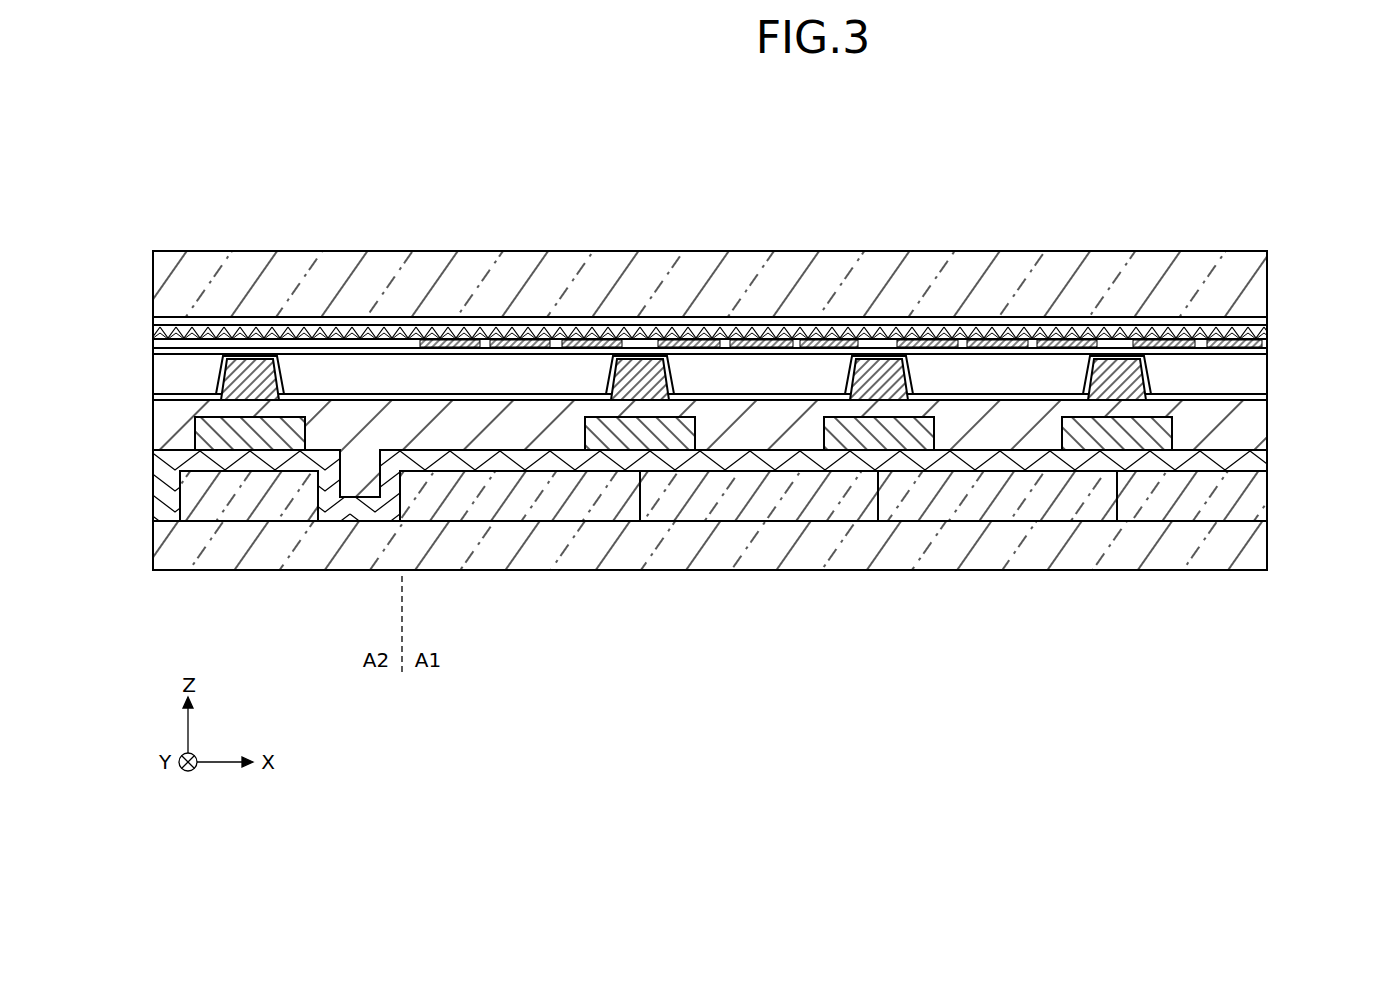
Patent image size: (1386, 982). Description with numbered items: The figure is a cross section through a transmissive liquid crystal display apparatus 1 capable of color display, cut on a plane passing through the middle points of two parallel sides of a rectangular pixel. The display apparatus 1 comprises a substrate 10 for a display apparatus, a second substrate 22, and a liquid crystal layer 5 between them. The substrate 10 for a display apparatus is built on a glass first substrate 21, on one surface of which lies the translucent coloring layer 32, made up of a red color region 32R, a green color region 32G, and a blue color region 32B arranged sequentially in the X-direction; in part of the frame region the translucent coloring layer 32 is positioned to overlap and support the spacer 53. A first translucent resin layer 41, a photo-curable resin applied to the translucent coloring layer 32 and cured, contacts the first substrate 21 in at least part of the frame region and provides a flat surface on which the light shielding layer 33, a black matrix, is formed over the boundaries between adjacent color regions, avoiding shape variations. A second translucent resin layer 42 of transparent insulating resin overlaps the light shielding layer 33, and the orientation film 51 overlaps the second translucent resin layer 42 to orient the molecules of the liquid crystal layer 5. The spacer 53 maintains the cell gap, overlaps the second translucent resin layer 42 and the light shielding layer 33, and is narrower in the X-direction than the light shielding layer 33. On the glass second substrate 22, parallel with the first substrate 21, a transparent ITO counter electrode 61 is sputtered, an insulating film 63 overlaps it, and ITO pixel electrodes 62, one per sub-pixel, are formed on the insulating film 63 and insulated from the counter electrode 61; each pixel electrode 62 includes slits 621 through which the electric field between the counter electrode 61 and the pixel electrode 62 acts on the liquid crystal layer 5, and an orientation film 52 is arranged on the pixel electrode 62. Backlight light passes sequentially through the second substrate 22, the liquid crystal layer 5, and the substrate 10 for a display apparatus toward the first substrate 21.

The display apparatus 1 is at (1208, 171).
The substrate for a display apparatus 10 is at (766, 400).
The first substrate 21 is at (1250, 545).
The second substrate 22 is at (1250, 263).
The translucent coloring layer 32 is at (752, 545).
The color region 32R is at (247, 500).
The color region 32G is at (770, 500).
The color region 32B is at (1000, 500).
The light shielding layer 33 is at (209, 428).
The first translucent resin layer 41 is at (1250, 462).
The second translucent resin layer 42 is at (1250, 425).
The liquid crystal layer 5 is at (1250, 380).
The orientation film 51 is at (1250, 397).
The orientation film 52 is at (1250, 352).
The spacer 53 is at (247, 375).
The counter electrode 61 is at (1252, 318).
The pixel electrode 62 is at (452, 342).
The slit 621 is at (486, 343).
The insulating film 63 is at (1252, 338).